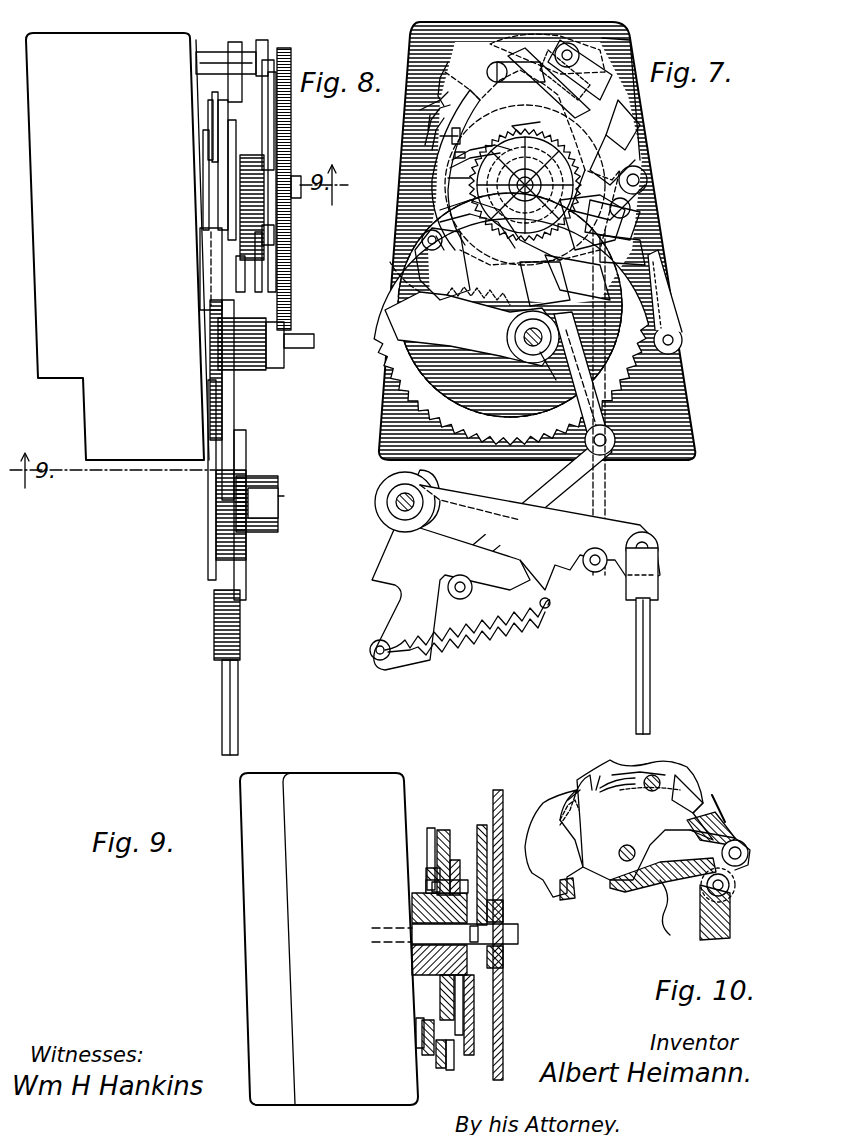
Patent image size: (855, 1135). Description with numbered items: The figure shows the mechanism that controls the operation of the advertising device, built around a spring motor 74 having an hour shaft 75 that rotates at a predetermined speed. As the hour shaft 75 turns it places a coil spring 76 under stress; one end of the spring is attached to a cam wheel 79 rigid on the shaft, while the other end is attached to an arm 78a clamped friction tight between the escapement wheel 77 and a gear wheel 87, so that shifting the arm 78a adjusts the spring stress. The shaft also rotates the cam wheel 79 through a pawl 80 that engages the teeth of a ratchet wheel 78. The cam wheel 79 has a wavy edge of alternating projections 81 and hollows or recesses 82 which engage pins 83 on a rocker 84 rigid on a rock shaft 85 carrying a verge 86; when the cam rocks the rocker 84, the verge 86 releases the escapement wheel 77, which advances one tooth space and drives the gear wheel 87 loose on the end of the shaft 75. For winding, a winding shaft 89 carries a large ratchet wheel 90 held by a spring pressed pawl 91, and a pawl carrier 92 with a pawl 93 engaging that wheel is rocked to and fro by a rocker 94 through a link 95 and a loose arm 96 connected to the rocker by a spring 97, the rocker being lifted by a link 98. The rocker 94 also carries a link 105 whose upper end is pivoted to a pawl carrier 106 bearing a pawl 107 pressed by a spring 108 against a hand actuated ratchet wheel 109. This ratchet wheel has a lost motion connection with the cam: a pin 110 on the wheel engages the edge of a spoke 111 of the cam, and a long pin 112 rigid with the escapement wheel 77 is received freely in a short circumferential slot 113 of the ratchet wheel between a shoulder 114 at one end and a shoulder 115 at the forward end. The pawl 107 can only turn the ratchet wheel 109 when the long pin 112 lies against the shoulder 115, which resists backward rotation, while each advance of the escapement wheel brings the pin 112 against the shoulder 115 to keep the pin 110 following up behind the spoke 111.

In FIG. 8, the motor 74 is at (117, 246).
In FIG. 7, the motor 74 is at (692, 400).
In FIG. 9, the motor 74 is at (329, 939).
In FIG. 8, the hour shaft 75 is at (298, 182).
In FIG. 7, the hour shaft 75 is at (525, 185).
In FIG. 9, the hour shaft 75 is at (518, 932).
In FIG. 10, the hour shaft 75 is at (672, 907).
In FIG. 8, the coil spring 76 is at (250, 190).
In FIG. 9, the coil spring 76 is at (468, 1020).
In FIG. 8, the escapement wheel 77 is at (270, 272).
In FIG. 7, the escapement wheel 77 is at (660, 242).
In FIG. 9, the escapement wheel 77 is at (482, 825).
In FIG. 8, the ratchet wheel 78 is at (229, 138).
In FIG. 7, the ratchet wheel 78 is at (640, 210).
In FIG. 9, the ratchet wheel 78 is at (455, 860).
In FIG. 8, the arm 78a is at (270, 232).
In FIG. 7, the arm 78a is at (652, 212).
In FIG. 9, the arm 78a is at (508, 960).
In FIG. 8, the cam wheel 79 is at (251, 279).
In FIG. 7, the cam wheel 79 is at (655, 226).
In FIG. 9, the cam wheel 79 is at (443, 830).
In FIG. 10, the cam wheel 79 is at (690, 780).
In FIG. 7, the pawl 80 is at (645, 70).
In FIG. 8, the projections 81 is at (224, 132).
In FIG. 7, the projections 81 is at (440, 214).
In FIG. 10, the projections 81 is at (668, 762).
In FIG. 8, the hollows or recesses 82 is at (215, 105).
In FIG. 7, the hollows or recesses 82 is at (452, 162).
In FIG. 10, the hollows or recesses 82 is at (640, 768).
In FIG. 8, the pins 83 is at (222, 75).
In FIG. 7, the pins 83 is at (516, 72).
In FIG. 8, the rocker 84 is at (238, 48).
In FIG. 7, the rocker 84 is at (598, 60).
In FIG. 8, the rock shaft 85 is at (266, 62).
In FIG. 7, the rock shaft 85 is at (600, 40).
In FIG. 8, the verge 86 is at (280, 64).
In FIG. 7, the verge 86 is at (547, 54).
In FIG. 8, the gear wheel 87 is at (291, 288).
In FIG. 7, the gear wheel 87 is at (468, 90).
In FIG. 9, the gear wheel 87 is at (498, 790).
In FIG. 10, the gear wheel 87 is at (555, 782).
In FIG. 8, the winding shaft 89 is at (300, 348).
In FIG. 7, the winding shaft 89 is at (554, 366).
In FIG. 8, the ratchet wheel 90 is at (216, 400).
In FIG. 7, the ratchet wheel 90 is at (688, 376).
In FIG. 7, the spring pressed pawl 91 is at (675, 318).
In FIG. 8, the pawl carrier 92 is at (228, 418).
In FIG. 7, the pawl carrier 92 is at (473, 314).
In FIG. 8, the pawl 93 is at (206, 242).
In FIG. 7, the pawl 93 is at (420, 229).
In FIG. 8, the rocker 94 is at (222, 527).
In FIG. 7, the rocker 94 is at (620, 525).
In FIG. 8, the link 95 is at (240, 470).
In FIG. 7, the link 95 is at (545, 478).
In FIG. 8, the loose arm 96 is at (264, 532).
In FIG. 7, the loose arm 96 is at (450, 570).
In FIG. 8, the spring 97 is at (242, 628).
In FIG. 7, the spring 97 is at (474, 640).
In FIG. 8, the link 98 is at (240, 695).
In FIG. 7, the link 98 is at (652, 655).
In FIG. 8, the link 105 is at (212, 485).
In FIG. 7, the link 105 is at (618, 480).
In FIG. 9, the link 105 is at (420, 1048).
In FIG. 10, the link 105 is at (730, 918).
In FIG. 8, the pawl carrier 106 is at (206, 150).
In FIG. 7, the pawl carrier 106 is at (648, 180).
In FIG. 9, the pawl carrier 106 is at (438, 1068).
In FIG. 10, the pawl carrier 106 is at (730, 878).
In FIG. 7, the pawl 107 is at (648, 155).
In FIG. 9, the pawl 107 is at (450, 1070).
In FIG. 10, the pawl 107 is at (735, 840).
In FIG. 7, the spring 108 is at (645, 120).
In FIG. 10, the spring 108 is at (726, 808).
In FIG. 8, the hand actuated ratchet wheel 109 is at (209, 108).
In FIG. 7, the hand actuated ratchet wheel 109 is at (640, 172).
In FIG. 9, the hand actuated ratchet wheel 109 is at (444, 992).
In FIG. 10, the hand actuated ratchet wheel 109 is at (705, 815).
In FIG. 7, the pin 110 is at (450, 136).
In FIG. 9, the pin 110 is at (430, 895).
In FIG. 10, the pin 110 is at (585, 875).
In FIG. 7, the spoke 111 is at (452, 178).
In FIG. 9, the spoke 111 is at (430, 888).
In FIG. 10, the spoke 111 is at (635, 888).
In FIG. 8, the long pin 112 is at (276, 135).
In FIG. 10, the long pin 112 is at (617, 793).
In FIG. 7, the slot 113 is at (440, 95).
In FIG. 10, the slot 113 is at (590, 776).
In FIG. 7, the shoulder 114 is at (570, 75).
In FIG. 10, the shoulder 114 is at (598, 778).
In FIG. 7, the shoulder 115 is at (432, 125).
In FIG. 10, the shoulder 115 is at (572, 790).